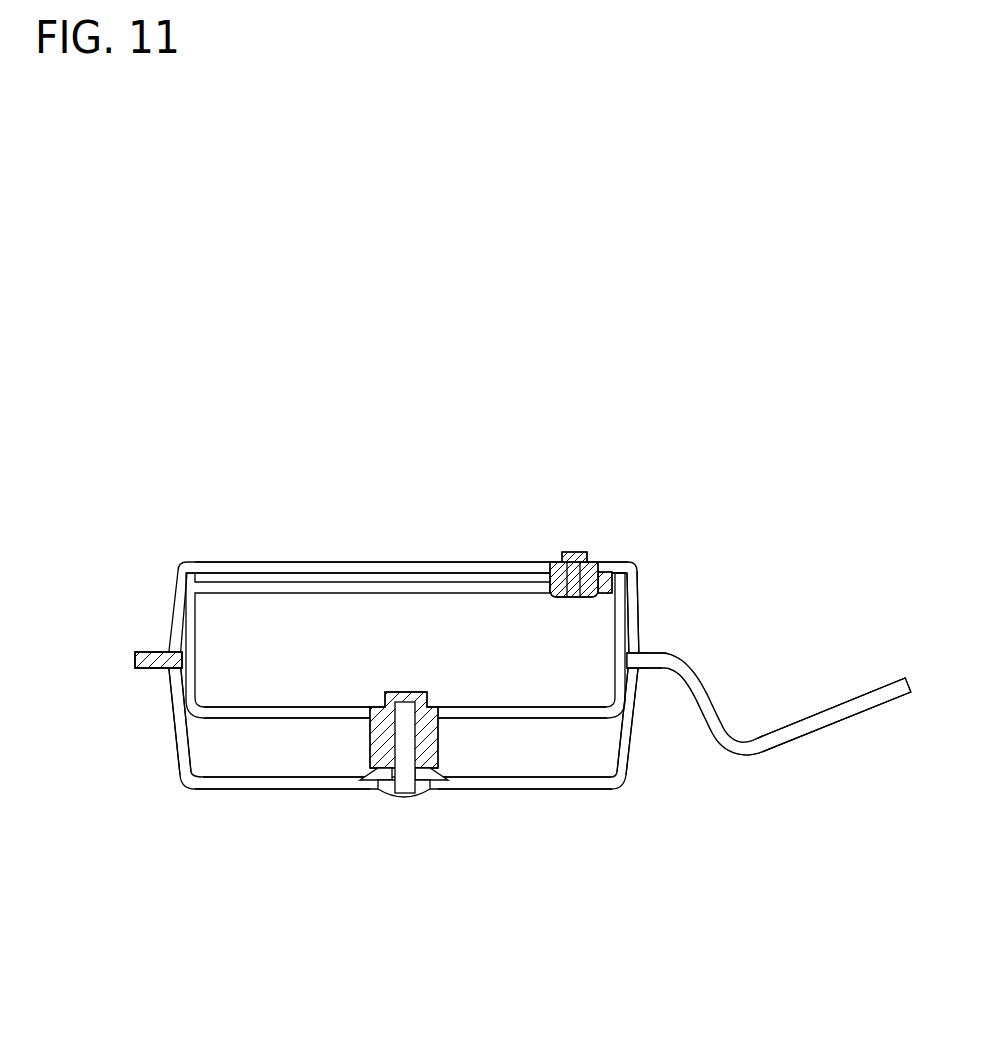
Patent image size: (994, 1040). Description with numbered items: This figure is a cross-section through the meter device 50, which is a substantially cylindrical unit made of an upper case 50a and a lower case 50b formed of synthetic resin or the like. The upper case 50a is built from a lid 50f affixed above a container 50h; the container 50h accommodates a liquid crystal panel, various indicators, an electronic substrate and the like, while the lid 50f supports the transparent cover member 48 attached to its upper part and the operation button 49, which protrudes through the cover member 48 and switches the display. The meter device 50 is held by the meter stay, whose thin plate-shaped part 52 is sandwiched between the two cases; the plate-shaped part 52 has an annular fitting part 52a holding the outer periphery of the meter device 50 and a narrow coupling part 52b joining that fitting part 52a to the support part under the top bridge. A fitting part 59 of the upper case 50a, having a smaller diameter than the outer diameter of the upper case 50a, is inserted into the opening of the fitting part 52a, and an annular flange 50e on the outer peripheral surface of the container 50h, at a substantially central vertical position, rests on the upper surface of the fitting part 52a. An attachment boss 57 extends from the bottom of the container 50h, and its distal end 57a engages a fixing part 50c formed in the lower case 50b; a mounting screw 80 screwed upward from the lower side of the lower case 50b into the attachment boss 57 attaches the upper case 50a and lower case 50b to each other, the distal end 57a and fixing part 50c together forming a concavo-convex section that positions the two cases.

The cover member 48 is at (423, 562).
The operation button 49 is at (573, 558).
The meter device 50 is at (303, 527).
The upper case 50a is at (375, 560).
The lower case 50b is at (240, 789).
The fixing part 50c is at (428, 790).
The annular flange 50e is at (172, 650).
The lid 50f is at (638, 593).
The container 50h is at (545, 718).
The plate-shaped part 52 is at (700, 685).
The fitting part 52a is at (167, 672).
The coupling part 52b is at (833, 722).
The attachment boss 57 is at (445, 740).
The distal end of attachment boss 57a is at (388, 790).
The fitting part 59 is at (172, 688).
The mounting screw 80 is at (403, 790).